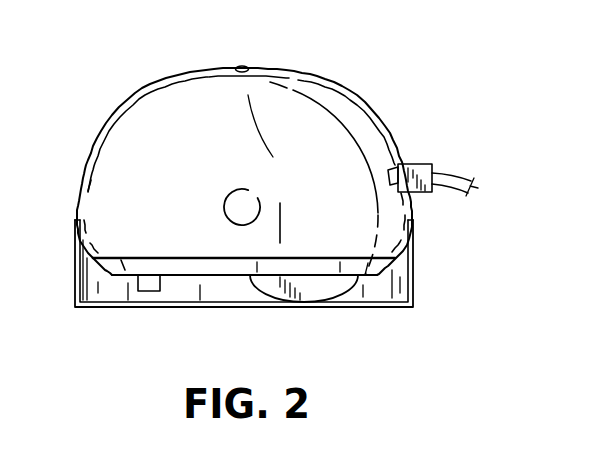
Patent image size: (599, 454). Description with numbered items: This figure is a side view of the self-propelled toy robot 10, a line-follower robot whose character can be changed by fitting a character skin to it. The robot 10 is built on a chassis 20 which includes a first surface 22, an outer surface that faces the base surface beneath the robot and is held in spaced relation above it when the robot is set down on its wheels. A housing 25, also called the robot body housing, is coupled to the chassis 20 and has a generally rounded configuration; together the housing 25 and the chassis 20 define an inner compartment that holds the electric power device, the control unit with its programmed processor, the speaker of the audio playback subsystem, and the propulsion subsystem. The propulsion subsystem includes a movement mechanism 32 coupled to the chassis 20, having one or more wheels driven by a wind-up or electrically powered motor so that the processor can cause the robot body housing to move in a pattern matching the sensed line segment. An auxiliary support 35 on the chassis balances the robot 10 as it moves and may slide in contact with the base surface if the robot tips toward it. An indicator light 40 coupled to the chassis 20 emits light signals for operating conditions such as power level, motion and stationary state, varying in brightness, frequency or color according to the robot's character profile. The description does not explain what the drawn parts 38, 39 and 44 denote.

The toy robot 10 is at (118, 86).
The chassis 20 is at (113, 268).
The first surface 22 is at (208, 278).
The housing 25 is at (296, 84).
The movement mechanism 32 is at (315, 303).
The auxiliary support 35 is at (152, 287).
The connector and cable 38 is at (447, 176).
The base housing 39 is at (102, 308).
The indicator light 40 is at (240, 66).
The port 44 is at (245, 194).